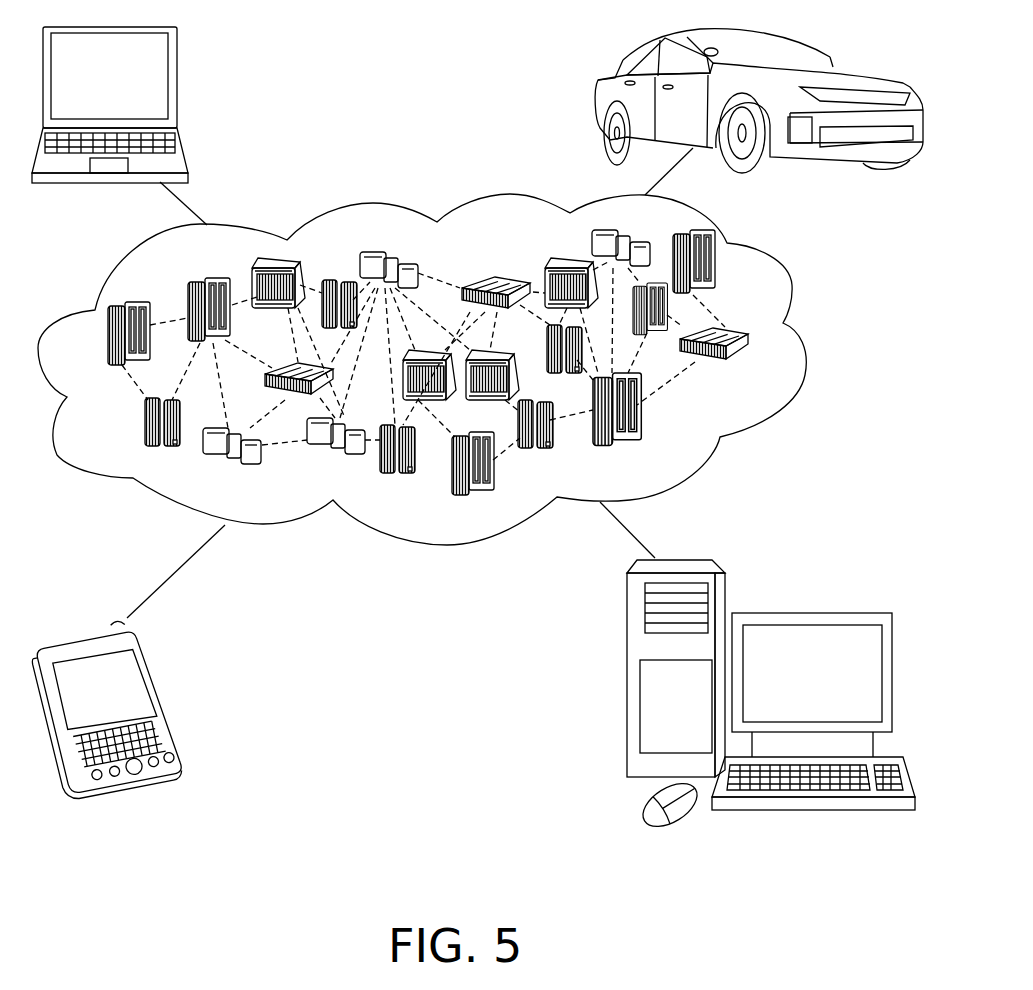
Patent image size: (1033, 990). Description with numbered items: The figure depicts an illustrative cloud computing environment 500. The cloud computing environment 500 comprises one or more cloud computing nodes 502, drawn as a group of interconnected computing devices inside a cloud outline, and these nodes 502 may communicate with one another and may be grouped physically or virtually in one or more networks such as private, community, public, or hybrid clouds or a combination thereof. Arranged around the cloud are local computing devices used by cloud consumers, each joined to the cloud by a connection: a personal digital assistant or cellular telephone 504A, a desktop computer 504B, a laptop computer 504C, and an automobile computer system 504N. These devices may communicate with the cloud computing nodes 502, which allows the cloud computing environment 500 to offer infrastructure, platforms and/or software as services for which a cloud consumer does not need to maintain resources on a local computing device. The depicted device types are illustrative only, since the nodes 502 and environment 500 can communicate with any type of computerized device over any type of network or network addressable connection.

The cloud computing environment 500 is at (793, 323).
The cloud computing nodes 502 is at (762, 377).
The personal digital assistant or cellular telephone 504A is at (155, 668).
The desktop computer 504B is at (800, 612).
The laptop computer 504C is at (177, 60).
The automobile computer system 504N is at (598, 103).